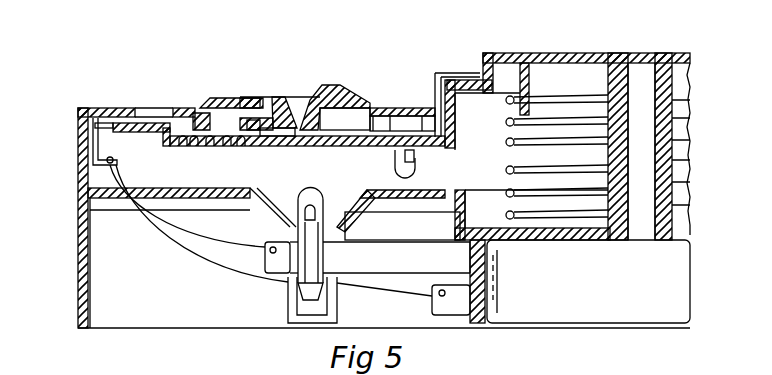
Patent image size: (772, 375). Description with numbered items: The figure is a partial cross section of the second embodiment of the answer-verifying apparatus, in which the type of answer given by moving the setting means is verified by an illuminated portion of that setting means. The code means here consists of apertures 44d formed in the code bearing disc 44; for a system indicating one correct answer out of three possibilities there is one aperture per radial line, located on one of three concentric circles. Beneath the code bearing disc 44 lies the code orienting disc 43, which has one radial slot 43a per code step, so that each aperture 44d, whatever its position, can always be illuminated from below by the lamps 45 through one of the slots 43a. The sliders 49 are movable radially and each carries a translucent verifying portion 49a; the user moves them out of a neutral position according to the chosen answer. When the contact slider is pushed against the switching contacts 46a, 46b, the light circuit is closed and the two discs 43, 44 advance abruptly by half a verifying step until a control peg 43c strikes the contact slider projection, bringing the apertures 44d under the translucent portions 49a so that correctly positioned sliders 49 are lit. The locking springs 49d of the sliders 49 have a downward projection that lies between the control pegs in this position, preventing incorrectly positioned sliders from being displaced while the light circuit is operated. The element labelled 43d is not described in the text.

The code orienting disc 43 is at (568, 55).
The radial slot 43a is at (318, 148).
The control peg 43c is at (185, 136).
The notches 43d is at (208, 146).
The code bearing means 44 is at (397, 107).
The aperture 44d is at (292, 146).
The lamp 45 is at (280, 217).
The switching contact 46a is at (103, 130).
The switching contact 46b is at (202, 171).
The slider 49 is at (336, 88).
The translucent verifying portion 49a is at (285, 115).
The locking spring 49d is at (193, 117).